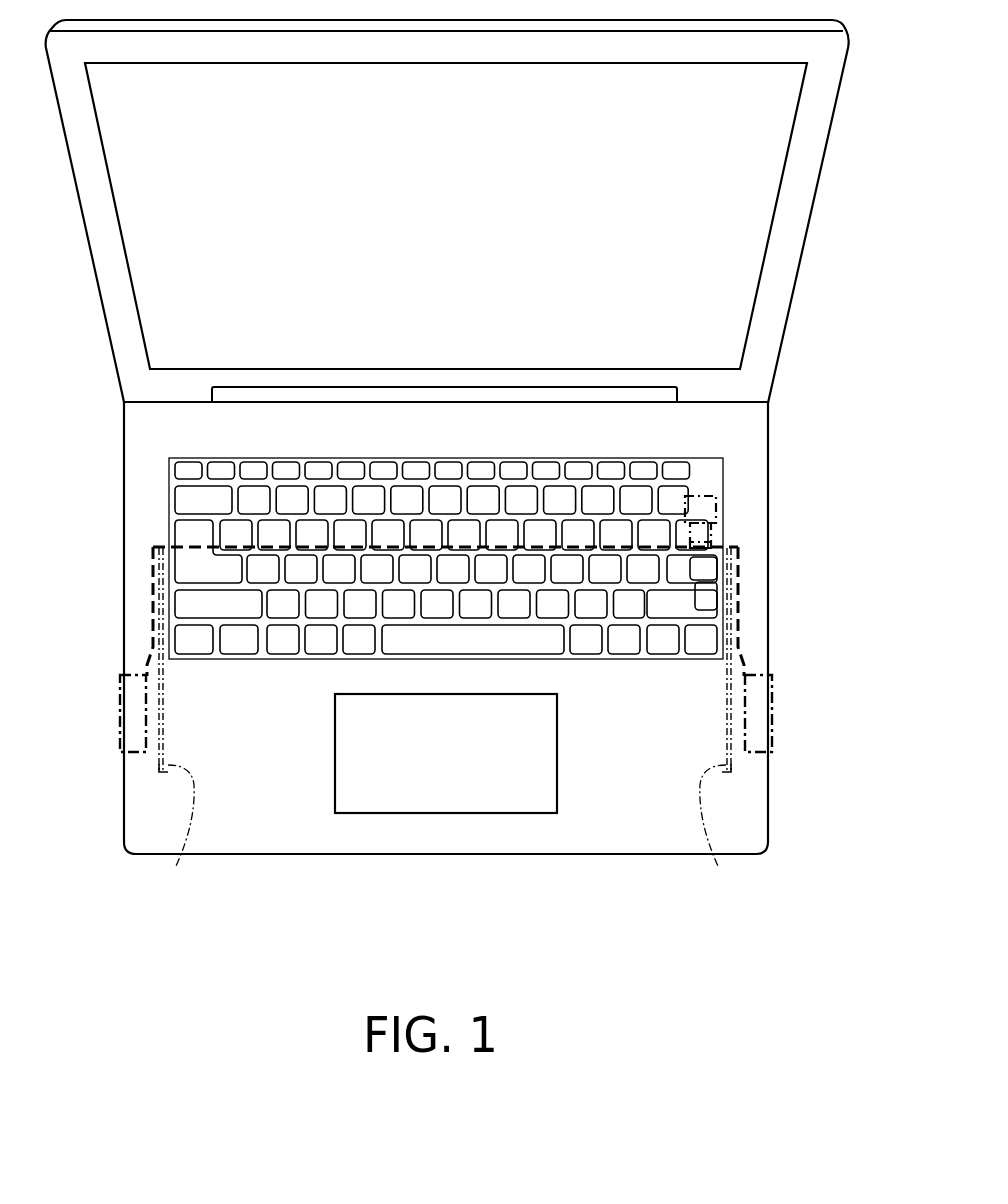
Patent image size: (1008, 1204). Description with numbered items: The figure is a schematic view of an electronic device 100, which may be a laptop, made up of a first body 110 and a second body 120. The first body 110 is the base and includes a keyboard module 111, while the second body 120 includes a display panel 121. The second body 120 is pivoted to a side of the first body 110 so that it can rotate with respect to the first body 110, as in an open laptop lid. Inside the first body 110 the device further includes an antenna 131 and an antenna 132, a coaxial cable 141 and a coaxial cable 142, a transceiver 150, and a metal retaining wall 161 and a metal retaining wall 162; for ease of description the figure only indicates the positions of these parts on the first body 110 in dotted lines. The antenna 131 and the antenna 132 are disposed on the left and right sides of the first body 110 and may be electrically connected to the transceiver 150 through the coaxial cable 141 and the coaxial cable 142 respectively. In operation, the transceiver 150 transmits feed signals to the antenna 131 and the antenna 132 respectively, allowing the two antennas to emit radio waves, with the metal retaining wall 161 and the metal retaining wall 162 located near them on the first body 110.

The electronic device 100 is at (463, 489).
The first body 110 is at (120, 425).
The keyboard module 111 is at (165, 499).
The second body 120 is at (463, 211).
The display panel 121 is at (758, 213).
The antenna 131 is at (772, 706).
The antenna 132 is at (120, 708).
The coaxial cable 141 is at (738, 611).
The coaxial cable 142 is at (154, 592).
The transceiver 150 is at (716, 502).
The metal retaining wall 161 is at (721, 836).
The metal retaining wall 162 is at (174, 836).